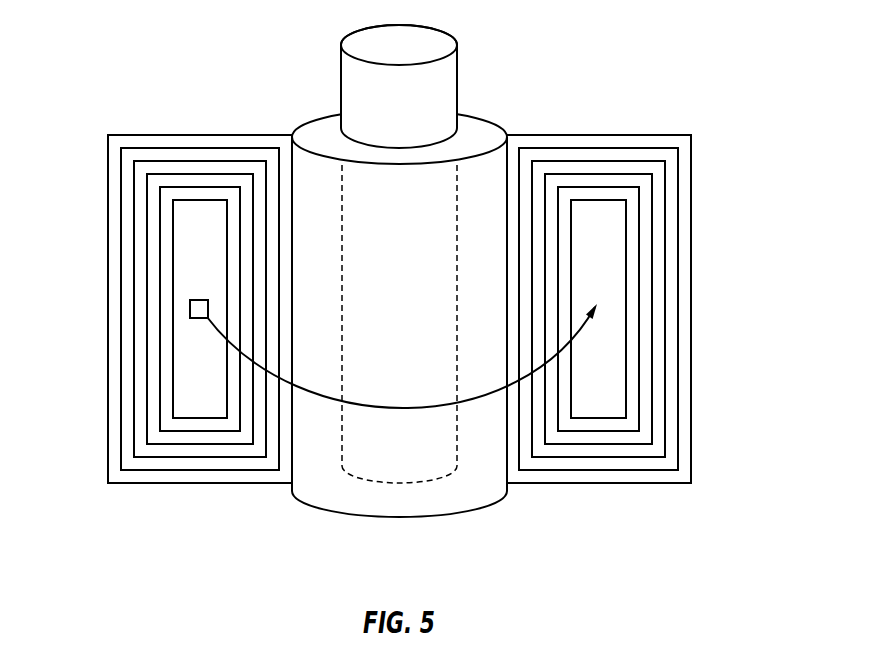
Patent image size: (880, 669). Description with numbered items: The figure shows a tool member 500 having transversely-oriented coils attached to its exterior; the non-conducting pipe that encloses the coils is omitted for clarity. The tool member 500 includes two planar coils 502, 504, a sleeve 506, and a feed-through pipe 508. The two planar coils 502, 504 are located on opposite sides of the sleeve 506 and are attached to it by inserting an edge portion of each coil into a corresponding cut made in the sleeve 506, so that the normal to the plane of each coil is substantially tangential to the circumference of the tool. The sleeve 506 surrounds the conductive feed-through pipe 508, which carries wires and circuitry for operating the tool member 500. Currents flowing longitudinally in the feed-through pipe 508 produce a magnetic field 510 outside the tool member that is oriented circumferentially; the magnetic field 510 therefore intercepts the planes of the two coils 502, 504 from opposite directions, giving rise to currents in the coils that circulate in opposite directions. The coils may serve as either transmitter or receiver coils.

The tool member 500 is at (185, 78).
The planar coil 502 is at (108, 310).
The planar coil 504 is at (691, 310).
The sleeve 506 is at (477, 127).
The feed-through pipe 508 is at (459, 75).
The magnetic field 510 is at (306, 389).